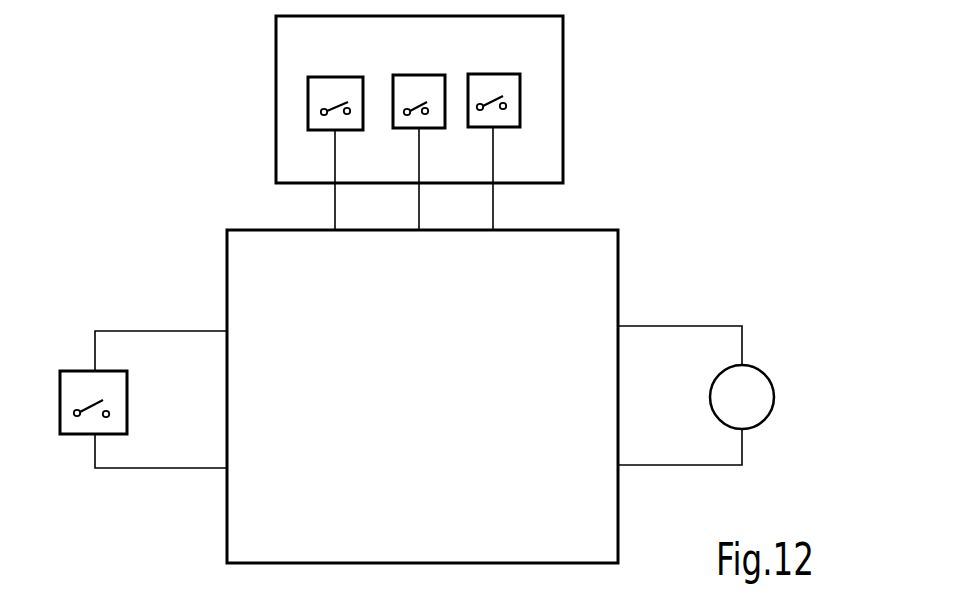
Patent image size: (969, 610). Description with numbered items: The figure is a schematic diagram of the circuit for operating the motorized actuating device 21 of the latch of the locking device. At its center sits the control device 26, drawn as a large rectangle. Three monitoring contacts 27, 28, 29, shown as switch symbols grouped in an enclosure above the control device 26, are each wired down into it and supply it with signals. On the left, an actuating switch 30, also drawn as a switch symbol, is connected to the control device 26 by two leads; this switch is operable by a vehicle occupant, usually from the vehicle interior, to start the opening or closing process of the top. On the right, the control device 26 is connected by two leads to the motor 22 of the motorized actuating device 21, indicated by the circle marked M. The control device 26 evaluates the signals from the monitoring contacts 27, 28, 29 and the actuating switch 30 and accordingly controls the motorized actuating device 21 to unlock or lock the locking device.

The motorized actuating device 21 is at (735, 358).
The motor 22 is at (758, 413).
The control device 26 is at (602, 247).
The monitoring contact 27 is at (333, 86).
The monitoring contact 28 is at (420, 86).
The monitoring contact 29 is at (503, 84).
The actuating switch 30 is at (72, 387).